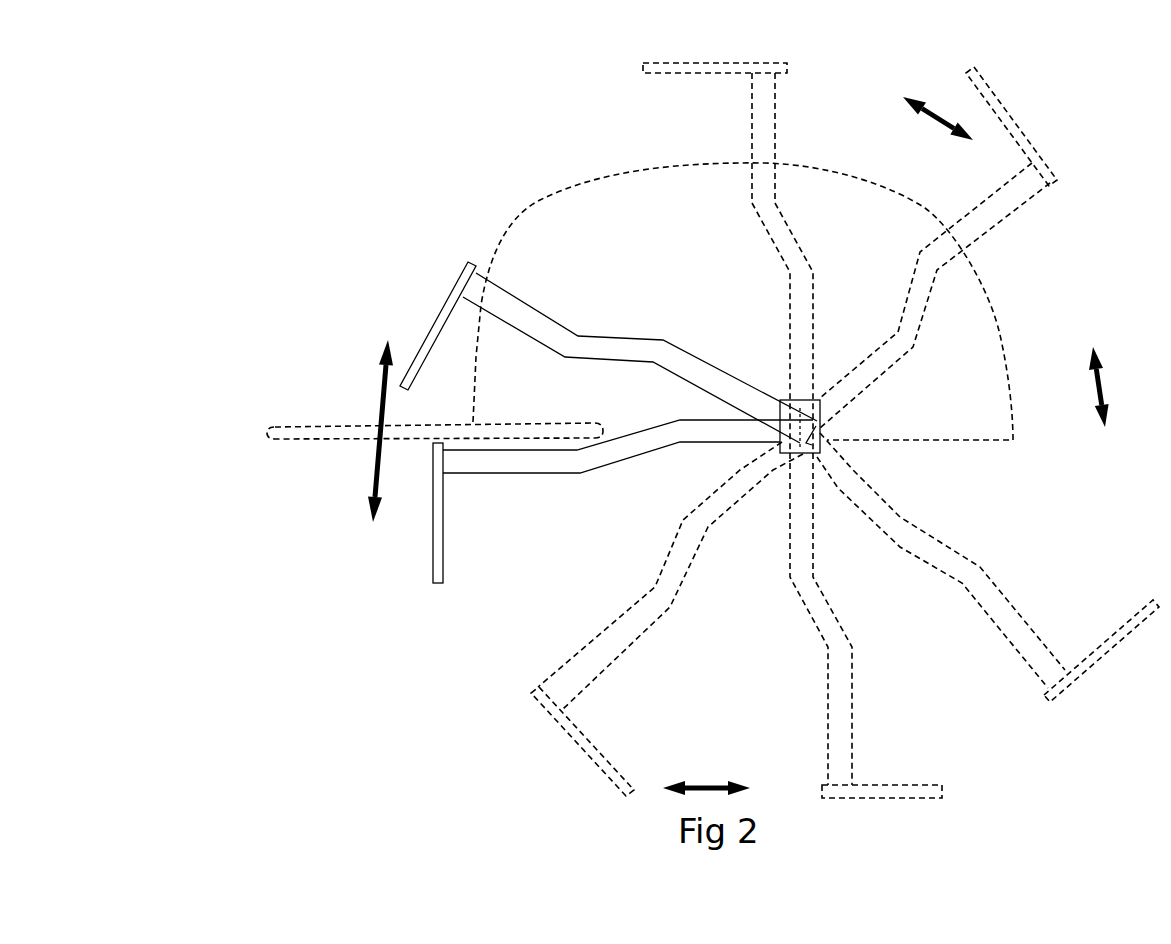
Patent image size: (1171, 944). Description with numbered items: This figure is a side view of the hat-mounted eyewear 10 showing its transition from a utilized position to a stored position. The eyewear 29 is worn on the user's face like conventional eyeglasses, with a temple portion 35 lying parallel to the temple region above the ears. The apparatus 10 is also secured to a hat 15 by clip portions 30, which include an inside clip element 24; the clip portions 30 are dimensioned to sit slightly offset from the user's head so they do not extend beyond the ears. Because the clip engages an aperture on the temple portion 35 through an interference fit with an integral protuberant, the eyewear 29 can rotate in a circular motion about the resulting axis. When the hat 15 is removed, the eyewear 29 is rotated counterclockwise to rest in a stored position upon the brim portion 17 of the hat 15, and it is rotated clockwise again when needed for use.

The hat-mounted eyewear 10 is at (218, 150).
The hat 15 is at (800, 232).
The brim portion 17 is at (303, 435).
The inside clip element 24 is at (783, 403).
The eyewear 29 is at (414, 228).
The clip portions 30 is at (420, 348).
The temple portion 35 is at (590, 337).